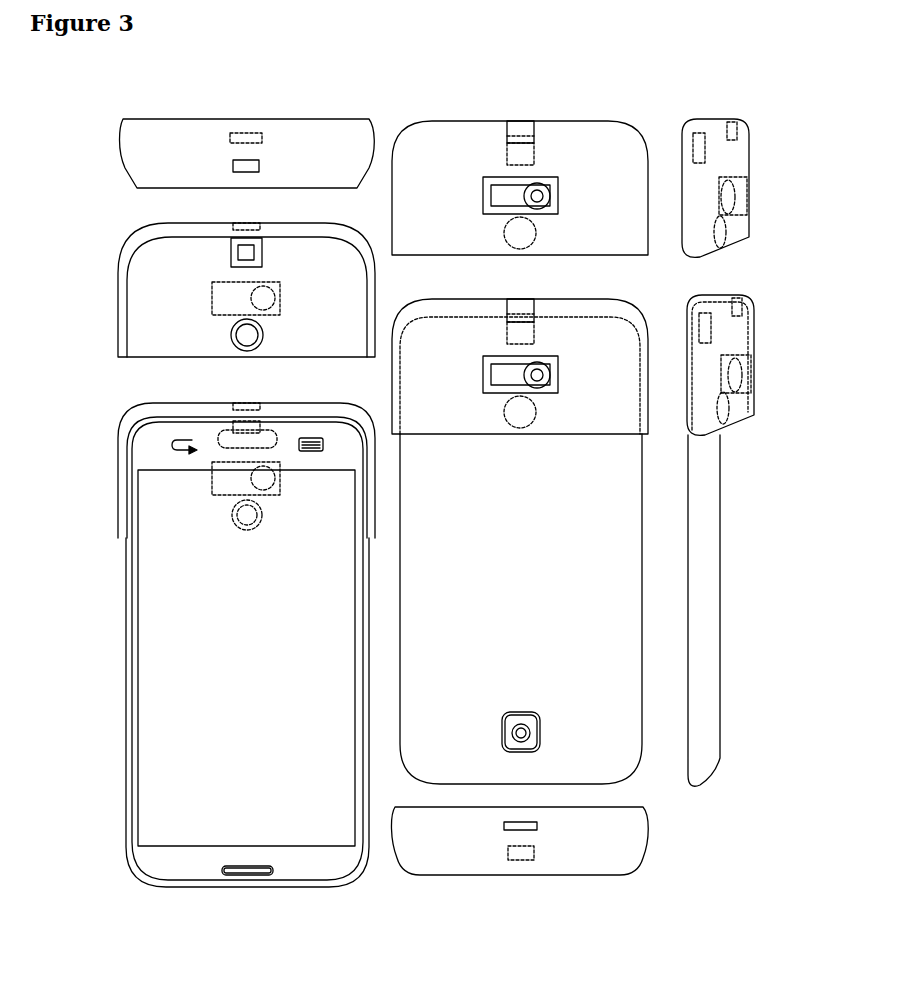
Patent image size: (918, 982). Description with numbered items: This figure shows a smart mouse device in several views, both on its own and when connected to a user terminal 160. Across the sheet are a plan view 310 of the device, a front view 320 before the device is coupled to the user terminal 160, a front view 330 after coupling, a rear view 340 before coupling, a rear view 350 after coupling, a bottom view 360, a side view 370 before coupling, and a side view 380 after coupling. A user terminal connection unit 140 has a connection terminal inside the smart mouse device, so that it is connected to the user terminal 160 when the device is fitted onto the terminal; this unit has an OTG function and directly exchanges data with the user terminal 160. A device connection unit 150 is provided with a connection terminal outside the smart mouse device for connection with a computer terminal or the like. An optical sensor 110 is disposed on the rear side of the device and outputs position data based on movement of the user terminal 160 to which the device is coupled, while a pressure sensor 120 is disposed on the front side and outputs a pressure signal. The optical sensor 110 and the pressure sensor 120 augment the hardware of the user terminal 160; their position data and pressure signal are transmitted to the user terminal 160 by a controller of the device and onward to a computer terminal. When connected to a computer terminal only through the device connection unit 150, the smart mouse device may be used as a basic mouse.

The optical sensor 110 is at (552, 375).
The pressure sensor 120 is at (232, 517).
The user terminal connection unit 140 is at (507, 310).
The device connection unit 150 is at (233, 428).
The user terminal 160 is at (126, 714).
The plan view 310 is at (120, 138).
The front view before coupling 320 is at (118, 341).
The front view after coupling 330 is at (118, 514).
The rear view before coupling 340 is at (630, 128).
The rear view after coupling 350 is at (605, 437).
The bottom view 360 is at (549, 876).
The side view before coupling 370 is at (749, 158).
The side view after coupling 380 is at (754, 402).